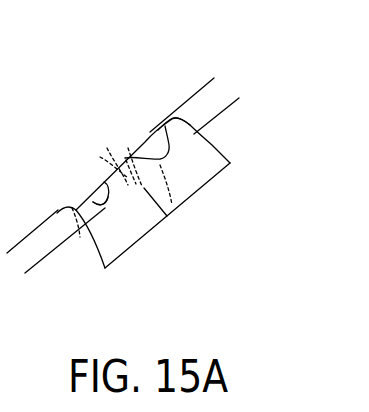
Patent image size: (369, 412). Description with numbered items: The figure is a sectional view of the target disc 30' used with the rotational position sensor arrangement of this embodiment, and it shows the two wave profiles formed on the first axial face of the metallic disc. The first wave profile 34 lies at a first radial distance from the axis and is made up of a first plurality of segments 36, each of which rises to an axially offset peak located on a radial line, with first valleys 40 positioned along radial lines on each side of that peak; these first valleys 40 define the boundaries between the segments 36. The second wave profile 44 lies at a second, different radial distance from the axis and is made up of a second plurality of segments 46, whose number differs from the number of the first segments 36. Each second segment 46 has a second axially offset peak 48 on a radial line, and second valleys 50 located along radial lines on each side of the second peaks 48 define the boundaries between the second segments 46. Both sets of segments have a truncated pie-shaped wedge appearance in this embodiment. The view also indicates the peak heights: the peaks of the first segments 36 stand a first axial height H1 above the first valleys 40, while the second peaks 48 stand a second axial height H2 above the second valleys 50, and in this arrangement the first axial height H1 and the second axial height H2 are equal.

The target disc 30' is at (148, 193).
The first wave profile 34 is at (177, 100).
The first plurality of segments 36 is at (126, 160).
The first valleys 40 is at (93, 202).
The second wave profile 44 is at (93, 166).
The second plurality of segments 46 is at (95, 203).
The second axially offset peak 48 is at (158, 133).
The second valleys 50 is at (130, 187).
The first axial height H1 is at (7, 210).
The second axial height H2 is at (183, 60).